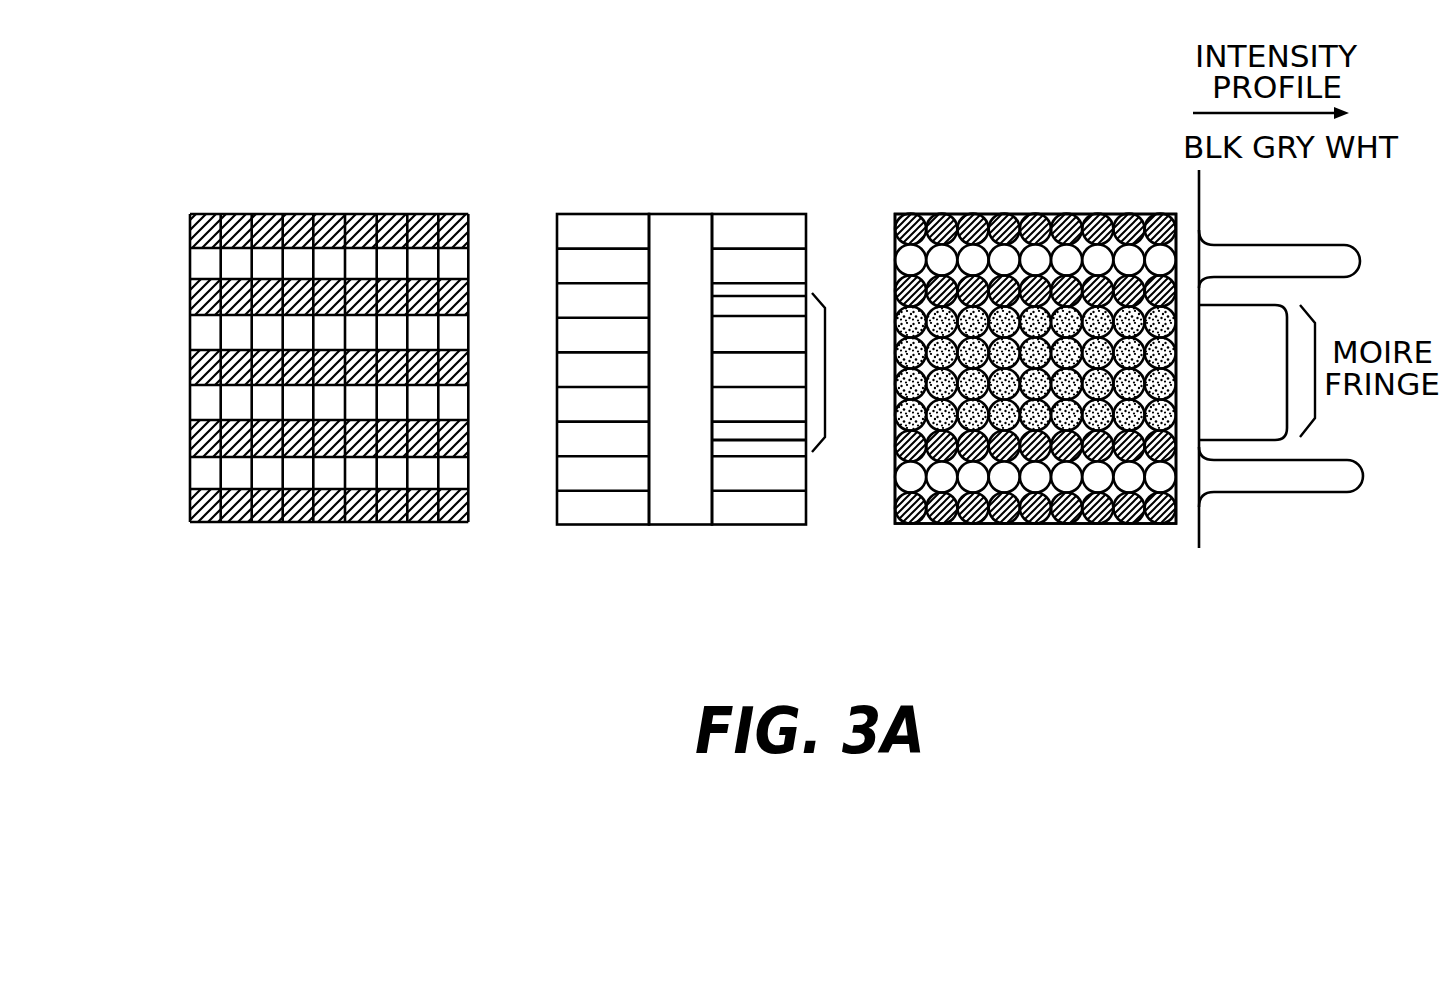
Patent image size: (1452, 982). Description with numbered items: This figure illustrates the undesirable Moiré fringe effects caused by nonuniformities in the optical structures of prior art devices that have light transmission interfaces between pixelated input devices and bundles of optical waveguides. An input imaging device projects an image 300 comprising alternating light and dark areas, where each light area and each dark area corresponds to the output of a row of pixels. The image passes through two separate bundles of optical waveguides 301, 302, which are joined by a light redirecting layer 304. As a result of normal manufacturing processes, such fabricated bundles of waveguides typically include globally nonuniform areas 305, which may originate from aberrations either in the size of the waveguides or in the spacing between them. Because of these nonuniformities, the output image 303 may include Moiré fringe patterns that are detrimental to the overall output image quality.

The image 300 is at (309, 524).
The bundle of optical waveguides 301 is at (595, 526).
The bundle of optical waveguides 302 is at (750, 526).
The output image 303 is at (1015, 523).
The light redirecting layer 304 is at (673, 243).
The globally nonuniform areas 305 is at (847, 372).